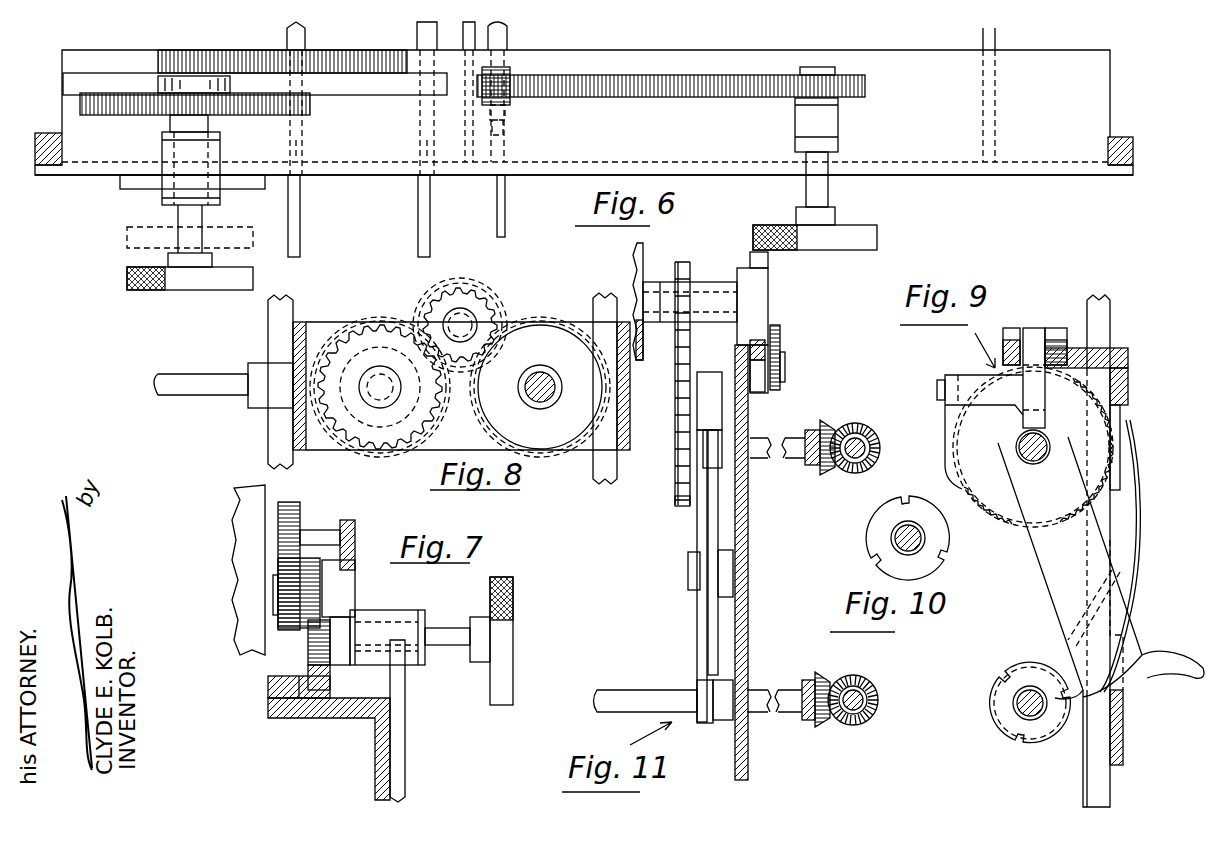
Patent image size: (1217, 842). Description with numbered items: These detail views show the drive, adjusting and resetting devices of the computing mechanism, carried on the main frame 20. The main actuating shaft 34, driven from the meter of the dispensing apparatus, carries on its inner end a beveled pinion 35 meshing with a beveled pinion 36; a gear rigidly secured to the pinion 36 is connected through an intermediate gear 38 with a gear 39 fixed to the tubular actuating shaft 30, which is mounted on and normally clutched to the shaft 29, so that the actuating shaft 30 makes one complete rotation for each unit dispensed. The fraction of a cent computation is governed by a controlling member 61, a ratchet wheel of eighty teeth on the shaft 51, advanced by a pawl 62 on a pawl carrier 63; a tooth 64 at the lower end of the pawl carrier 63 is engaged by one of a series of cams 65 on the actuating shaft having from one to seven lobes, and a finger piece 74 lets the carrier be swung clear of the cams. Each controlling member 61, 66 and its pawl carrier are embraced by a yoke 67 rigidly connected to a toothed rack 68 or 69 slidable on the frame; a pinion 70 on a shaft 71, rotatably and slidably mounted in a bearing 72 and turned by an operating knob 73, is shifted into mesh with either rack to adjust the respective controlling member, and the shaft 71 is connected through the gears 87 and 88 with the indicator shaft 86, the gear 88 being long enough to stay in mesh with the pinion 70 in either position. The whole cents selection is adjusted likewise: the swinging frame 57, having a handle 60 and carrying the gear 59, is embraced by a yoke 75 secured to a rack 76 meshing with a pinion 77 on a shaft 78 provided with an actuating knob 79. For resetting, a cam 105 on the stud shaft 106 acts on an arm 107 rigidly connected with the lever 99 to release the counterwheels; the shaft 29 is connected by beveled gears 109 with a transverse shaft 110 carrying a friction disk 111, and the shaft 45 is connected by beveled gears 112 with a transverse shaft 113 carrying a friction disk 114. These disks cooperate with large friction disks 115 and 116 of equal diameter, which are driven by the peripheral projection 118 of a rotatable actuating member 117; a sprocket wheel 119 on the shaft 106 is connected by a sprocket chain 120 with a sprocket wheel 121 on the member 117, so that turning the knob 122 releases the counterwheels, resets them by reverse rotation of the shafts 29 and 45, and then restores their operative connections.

In FIG. 6, the frame plate 20 is at (376, 176).
In FIG. 8, the frame plate 20 is at (270, 424).
In FIG. 8, the shaft 29 is at (539, 373).
In FIG. 11, the shaft 29 is at (864, 694).
In FIG. 10, the shaft 29 is at (906, 522).
In FIG. 9, the shaft 29 is at (1015, 702).
In FIG. 8, the actuating shaft 30 is at (531, 403).
In FIG. 10, the actuating shaft 30 is at (898, 533).
In FIG. 9, the actuating shaft 30 is at (1018, 714).
In FIG. 8, the shaft 34 is at (208, 378).
In FIG. 8, the beveled pinion 35 is at (345, 400).
In FIG. 8, the beveled pinion 36 is at (372, 355).
In FIG. 8, the intermediate gear 38 is at (497, 333).
In FIG. 8, the gear 39 is at (505, 405).
In FIG. 11, the shaft 45 is at (857, 440).
In FIG. 9, the shaft 45 is at (1043, 463).
In FIG. 9, the shaft 51 is at (1037, 461).
In FIG. 6, the swinging frame 57 is at (508, 36).
In FIG. 6, the gear 59 is at (505, 130).
In FIG. 6, the handle 60 is at (505, 215).
In FIG. 6, the controlling member 61 is at (420, 40).
In FIG. 9, the controlling member 61 is at (1025, 447).
In FIG. 6, the pawl 62 is at (300, 186).
In FIG. 9, the pawl 62 is at (1133, 554).
In FIG. 6, the pawl carrier 63 is at (306, 139).
In FIG. 9, the pawl carrier 63 is at (1037, 572).
In FIG. 9, the tooth 64 is at (1070, 685).
In FIG. 10, the cam 65 is at (890, 556).
In FIG. 9, the cam 65 is at (1040, 736).
In FIG. 6, the controlling member 66 is at (290, 39).
In FIG. 6, the yoke 67 is at (410, 86).
In FIG. 9, the yoke 67 is at (1028, 398).
In FIG. 6, the toothed rack 68 is at (378, 52).
In FIG. 7, the toothed rack 68 is at (268, 693).
In FIG. 9, the toothed rack 68 is at (1015, 328).
In FIG. 6, the toothed rack 69 is at (266, 115).
In FIG. 7, the toothed rack 69 is at (330, 690).
In FIG. 9, the toothed rack 69 is at (1056, 330).
In FIG. 6, the pinion 70 is at (168, 122).
In FIG. 7, the pinion 70 is at (308, 665).
In FIG. 6, the shaft 71 is at (205, 217).
In FIG. 7, the shaft 71 is at (458, 648).
In FIG. 6, the bearing 72 is at (162, 149).
In FIG. 7, the bearing 72 is at (382, 614).
In FIG. 6, the operating knob 73 is at (170, 290).
In FIG. 7, the operating knob 73 is at (503, 662).
In FIG. 6, the finger piece 74 is at (430, 232).
In FIG. 9, the finger piece 74 is at (1150, 662).
In FIG. 6, the yoke 75 is at (505, 95).
In FIG. 6, the rack 76 is at (650, 98).
In FIG. 6, the pinion 77 is at (866, 88).
In FIG. 6, the shaft 78 is at (829, 192).
In FIG. 6, the actuating knob 79 is at (878, 237).
In FIG. 7, the indicator shaft 86 is at (322, 530).
In FIG. 7, the gear 87 is at (302, 516).
In FIG. 7, the gear 88 is at (300, 628).
In FIG. 11, the lever 99 is at (773, 390).
In FIG. 11, the cam 105 is at (769, 276).
In FIG. 11, the stud shaft 106 is at (702, 292).
In FIG. 11, the arm 107 is at (768, 353).
In FIG. 11, the beveled gears 109 is at (829, 726).
In FIG. 11, the transverse shaft 110 is at (785, 688).
In FIG. 11, the friction disk 111 is at (700, 686).
In FIG. 11, the beveled gears 112 is at (830, 470).
In FIG. 11, the transverse shaft 113 is at (785, 440).
In FIG. 11, the friction disk 114 is at (722, 452).
In FIG. 11, the friction disk 115 is at (700, 612).
In FIG. 11, the friction disk 116 is at (712, 522).
In FIG. 11, the actuating member 117 is at (710, 375).
In FIG. 11, the peripheral projection 118 is at (688, 576).
In FIG. 11, the sprocket wheel 119 is at (688, 265).
In FIG. 11, the sprocket chain 120 is at (678, 392).
In FIG. 11, the sprocket wheel 121 is at (676, 504).
In FIG. 11, the knob 122 is at (647, 272).